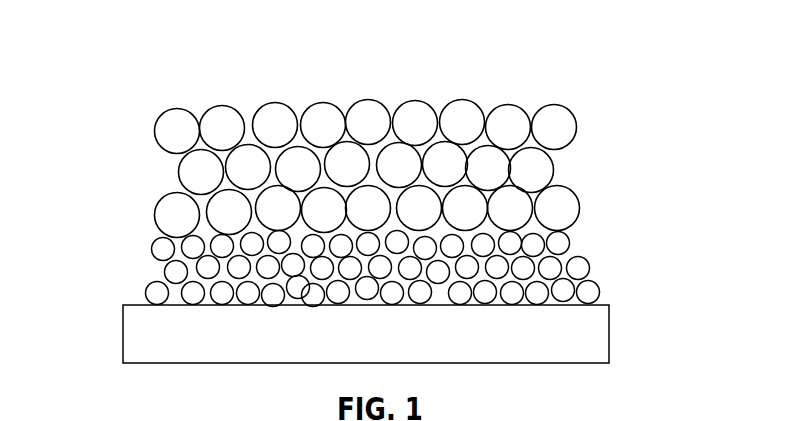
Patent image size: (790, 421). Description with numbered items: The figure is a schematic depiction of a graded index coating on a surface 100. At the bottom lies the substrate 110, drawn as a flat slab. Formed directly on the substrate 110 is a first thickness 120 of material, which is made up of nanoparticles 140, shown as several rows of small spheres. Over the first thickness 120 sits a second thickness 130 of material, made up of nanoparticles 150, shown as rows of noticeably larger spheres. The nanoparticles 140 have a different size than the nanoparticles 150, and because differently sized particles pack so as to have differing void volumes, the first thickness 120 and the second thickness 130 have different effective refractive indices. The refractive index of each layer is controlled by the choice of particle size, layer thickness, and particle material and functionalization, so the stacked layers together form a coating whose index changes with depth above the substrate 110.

The surface 100 is at (118, 45).
The substrate 110 is at (600, 343).
The first thickness 120 is at (371, 265).
The second thickness 130 is at (372, 169).
The nanoparticles 140 is at (162, 252).
The nanoparticles 150 is at (162, 147).